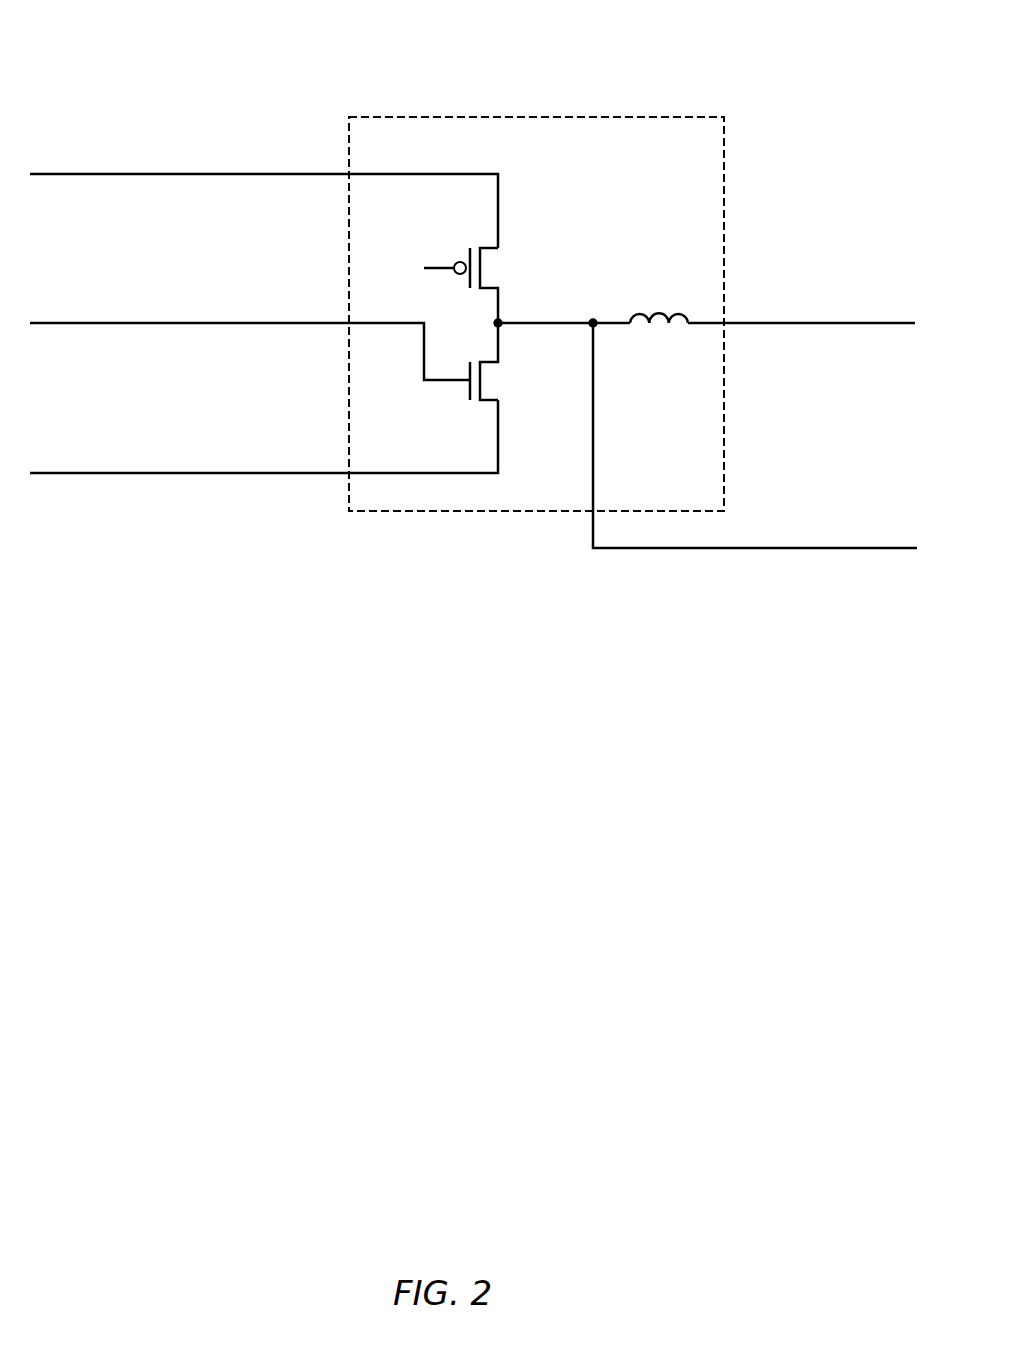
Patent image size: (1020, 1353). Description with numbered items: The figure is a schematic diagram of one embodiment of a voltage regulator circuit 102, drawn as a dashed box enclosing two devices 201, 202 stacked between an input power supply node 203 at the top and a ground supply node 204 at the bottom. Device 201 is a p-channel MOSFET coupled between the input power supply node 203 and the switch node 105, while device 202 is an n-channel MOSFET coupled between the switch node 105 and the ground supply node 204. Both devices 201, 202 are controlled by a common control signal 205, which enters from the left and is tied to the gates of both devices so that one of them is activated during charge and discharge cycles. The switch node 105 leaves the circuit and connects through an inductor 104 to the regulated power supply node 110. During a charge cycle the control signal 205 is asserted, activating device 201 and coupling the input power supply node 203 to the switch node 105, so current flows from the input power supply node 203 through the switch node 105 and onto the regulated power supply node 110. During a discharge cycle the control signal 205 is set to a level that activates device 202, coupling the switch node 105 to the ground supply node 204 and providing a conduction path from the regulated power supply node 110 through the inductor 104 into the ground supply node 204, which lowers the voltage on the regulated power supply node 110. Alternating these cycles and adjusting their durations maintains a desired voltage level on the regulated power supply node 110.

The voltage regulator circuit 102 is at (627, 116).
The inductor 104 is at (677, 312).
The switch node 105 is at (705, 445).
The regulated power supply node 110 is at (802, 312).
The device 201 is at (490, 270).
The device 202 is at (490, 380).
The input power supply node 203 is at (264, 198).
The ground supply node 204 is at (264, 450).
The control signal 205 is at (250, 324).